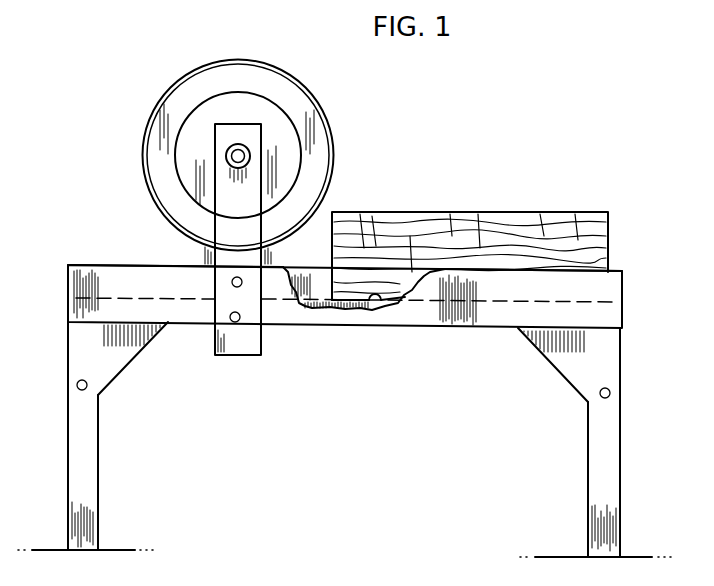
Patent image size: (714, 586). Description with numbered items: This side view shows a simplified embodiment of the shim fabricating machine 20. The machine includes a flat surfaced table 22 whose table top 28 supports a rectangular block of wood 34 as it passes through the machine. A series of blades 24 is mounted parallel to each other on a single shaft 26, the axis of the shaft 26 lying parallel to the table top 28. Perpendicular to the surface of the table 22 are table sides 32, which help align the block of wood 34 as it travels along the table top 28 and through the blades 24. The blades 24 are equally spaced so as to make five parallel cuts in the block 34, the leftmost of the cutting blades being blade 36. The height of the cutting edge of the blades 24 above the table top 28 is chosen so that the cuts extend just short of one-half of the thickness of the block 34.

The shim fabricating machine 20 is at (181, 420).
The flat surfaced table 22 is at (497, 303).
The blades 24 is at (200, 118).
The shaft 26 is at (240, 144).
The table top 28 is at (380, 302).
The table sides 32 is at (323, 282).
The rectangular block of wood 34 is at (470, 240).
The blade 36 is at (300, 108).